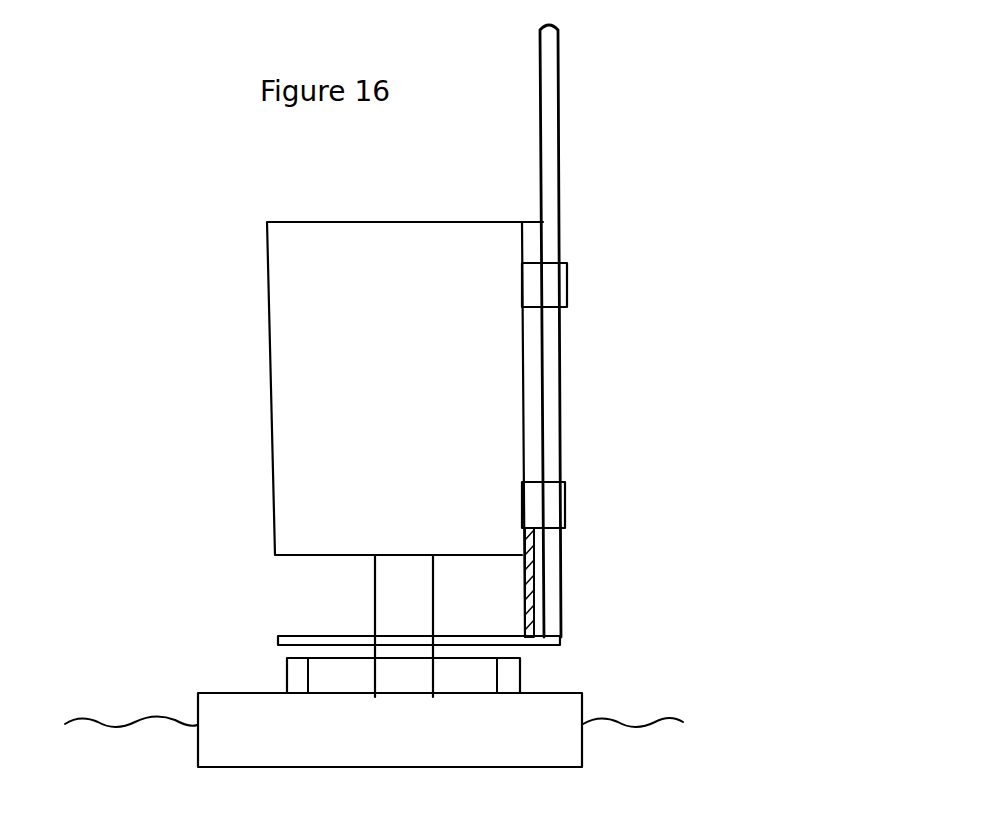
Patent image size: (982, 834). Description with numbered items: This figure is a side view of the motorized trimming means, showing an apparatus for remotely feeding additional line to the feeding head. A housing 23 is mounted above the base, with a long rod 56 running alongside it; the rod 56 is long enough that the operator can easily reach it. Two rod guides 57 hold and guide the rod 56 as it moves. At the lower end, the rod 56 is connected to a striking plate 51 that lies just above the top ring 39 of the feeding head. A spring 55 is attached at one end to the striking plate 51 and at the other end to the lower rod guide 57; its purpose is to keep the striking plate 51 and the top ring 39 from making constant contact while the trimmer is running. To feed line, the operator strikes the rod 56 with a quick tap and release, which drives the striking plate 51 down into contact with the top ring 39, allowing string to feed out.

The battery housing / control box 23 is at (260, 394).
The rod 56 is at (588, 384).
The rod guides 57 is at (594, 298).
The spring 55 is at (552, 598).
The striking plate 51 is at (245, 655).
The top ring 39 is at (476, 683).